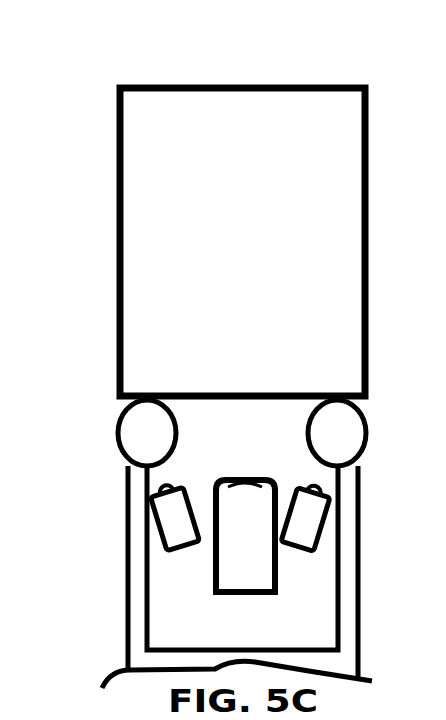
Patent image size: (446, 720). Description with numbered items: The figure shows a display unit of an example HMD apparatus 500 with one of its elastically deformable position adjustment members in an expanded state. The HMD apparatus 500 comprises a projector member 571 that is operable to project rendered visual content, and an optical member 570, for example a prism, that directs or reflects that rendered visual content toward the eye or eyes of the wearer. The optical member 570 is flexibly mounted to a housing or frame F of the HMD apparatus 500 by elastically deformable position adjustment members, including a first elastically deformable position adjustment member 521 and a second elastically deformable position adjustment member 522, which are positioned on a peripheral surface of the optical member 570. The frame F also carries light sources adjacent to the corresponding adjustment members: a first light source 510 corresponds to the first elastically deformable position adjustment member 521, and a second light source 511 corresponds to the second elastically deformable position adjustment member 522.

The HMD apparatus 500 is at (68, 78).
The optical member 570 is at (267, 252).
The first elastically deformable position adjustment member 521 is at (170, 442).
The second elastically deformable position adjustment member 522 is at (360, 442).
The projector member 571 is at (270, 543).
The first light source 510 is at (158, 525).
The second light source 511 is at (323, 524).
The frame F is at (358, 487).